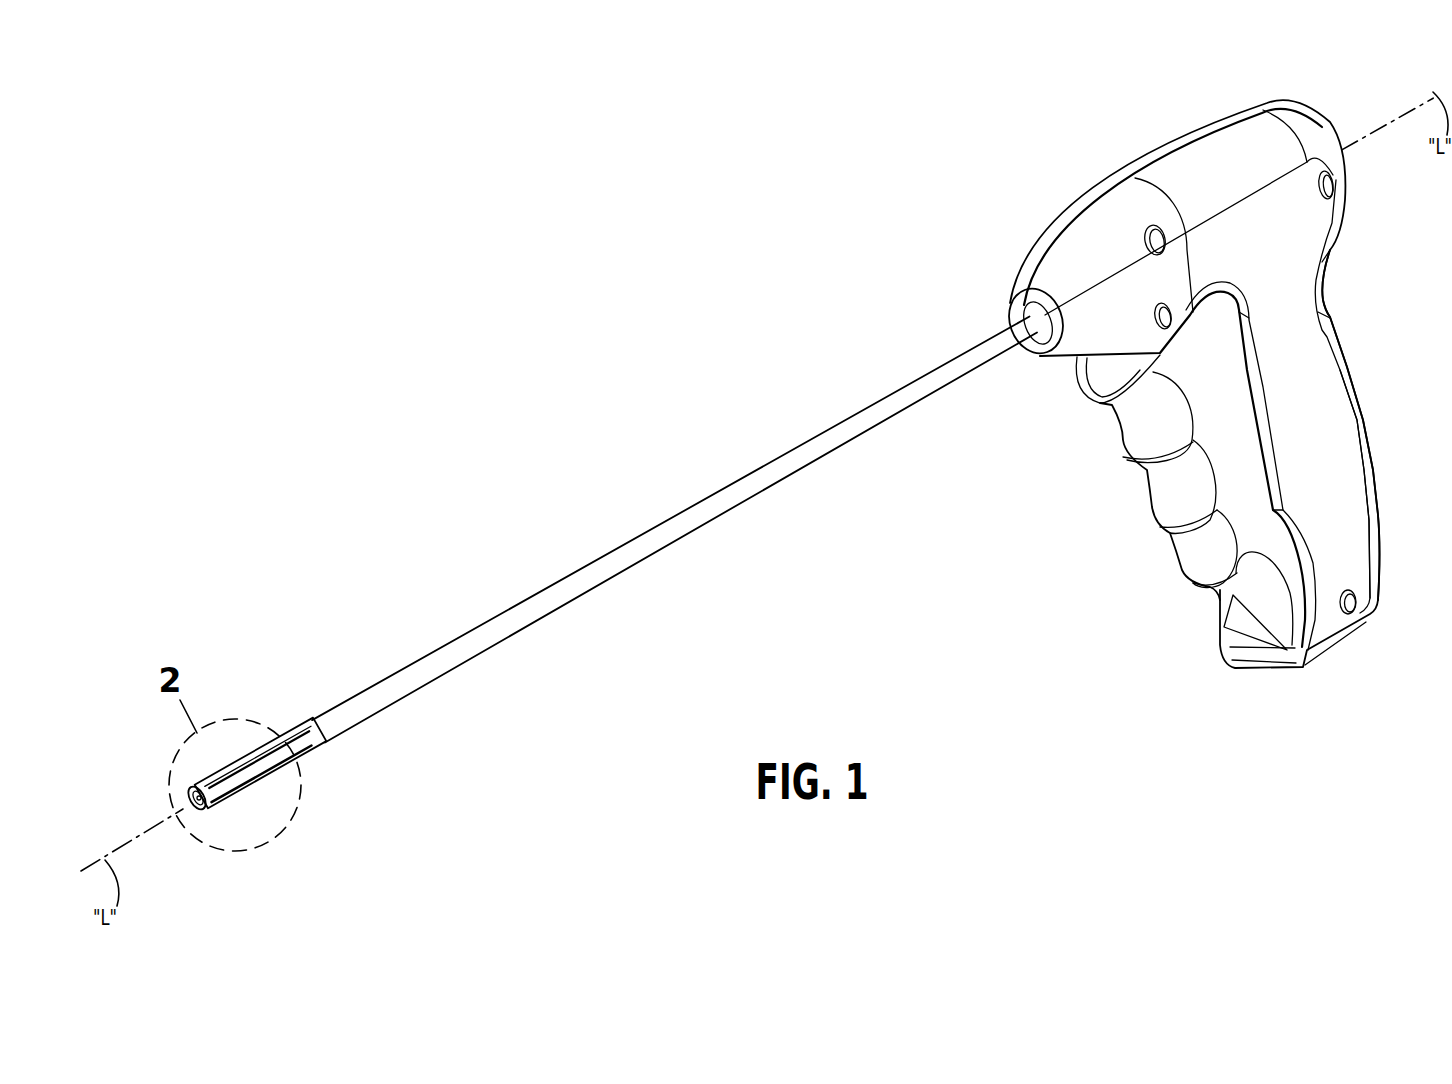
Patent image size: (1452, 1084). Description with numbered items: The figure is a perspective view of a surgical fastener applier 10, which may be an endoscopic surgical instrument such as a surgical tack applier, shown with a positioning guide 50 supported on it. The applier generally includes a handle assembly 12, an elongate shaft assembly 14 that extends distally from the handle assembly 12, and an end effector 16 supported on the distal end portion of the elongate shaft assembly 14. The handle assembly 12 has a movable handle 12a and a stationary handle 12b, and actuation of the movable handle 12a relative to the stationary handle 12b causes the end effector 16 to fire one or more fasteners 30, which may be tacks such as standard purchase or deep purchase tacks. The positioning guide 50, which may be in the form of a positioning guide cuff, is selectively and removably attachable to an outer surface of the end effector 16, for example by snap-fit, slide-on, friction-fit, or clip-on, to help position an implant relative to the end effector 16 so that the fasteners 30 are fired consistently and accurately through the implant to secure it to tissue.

The surgical fastener applier 10 is at (1312, 127).
The handle assembly 12 is at (1320, 398).
The movable handle 12a is at (1203, 557).
The stationary handle 12b is at (1343, 483).
The elongate shaft assembly 14 is at (647, 537).
The end effector 16 is at (223, 793).
The fasteners 30 is at (185, 810).
The positioning guide 50 is at (248, 752).